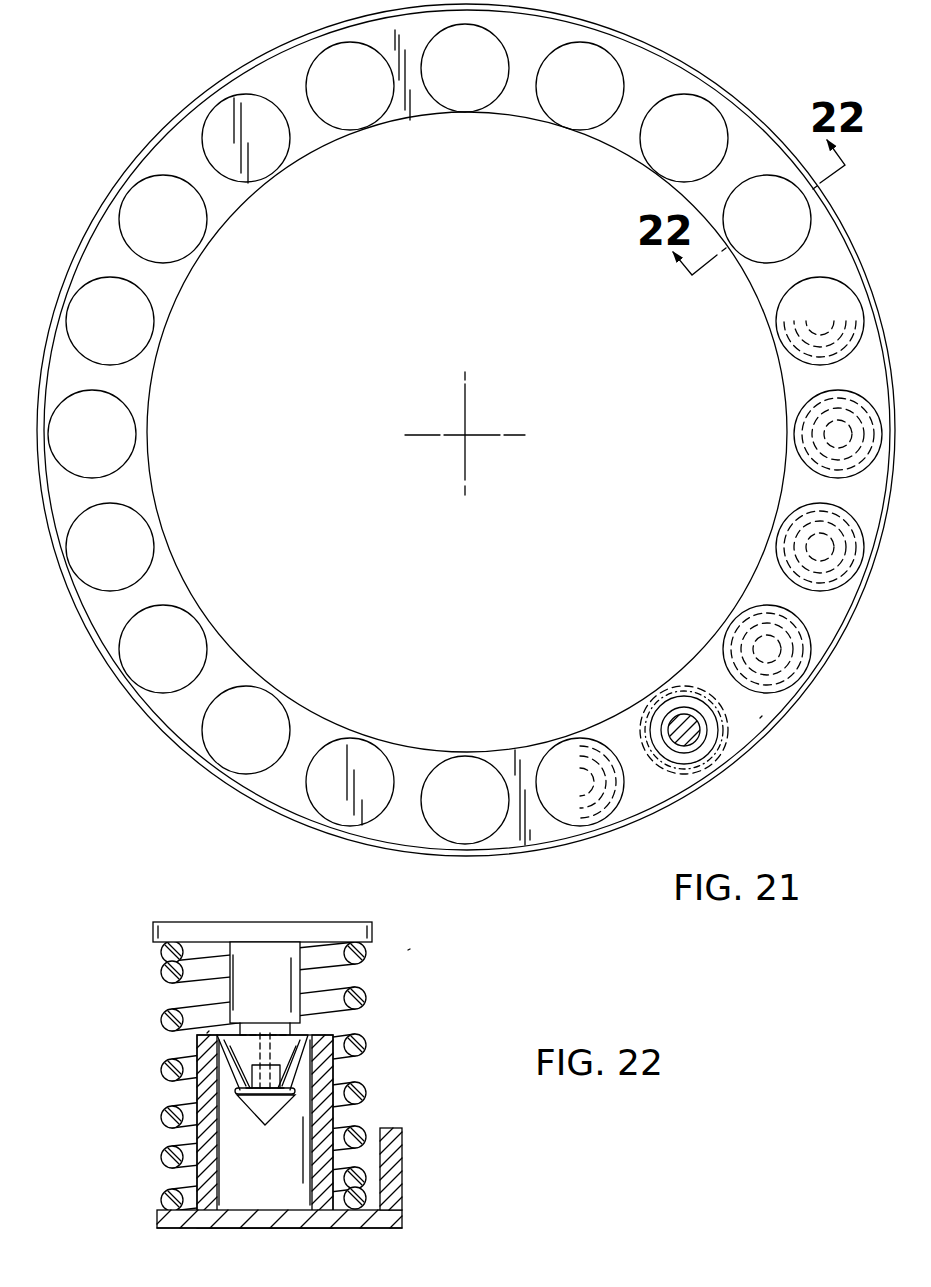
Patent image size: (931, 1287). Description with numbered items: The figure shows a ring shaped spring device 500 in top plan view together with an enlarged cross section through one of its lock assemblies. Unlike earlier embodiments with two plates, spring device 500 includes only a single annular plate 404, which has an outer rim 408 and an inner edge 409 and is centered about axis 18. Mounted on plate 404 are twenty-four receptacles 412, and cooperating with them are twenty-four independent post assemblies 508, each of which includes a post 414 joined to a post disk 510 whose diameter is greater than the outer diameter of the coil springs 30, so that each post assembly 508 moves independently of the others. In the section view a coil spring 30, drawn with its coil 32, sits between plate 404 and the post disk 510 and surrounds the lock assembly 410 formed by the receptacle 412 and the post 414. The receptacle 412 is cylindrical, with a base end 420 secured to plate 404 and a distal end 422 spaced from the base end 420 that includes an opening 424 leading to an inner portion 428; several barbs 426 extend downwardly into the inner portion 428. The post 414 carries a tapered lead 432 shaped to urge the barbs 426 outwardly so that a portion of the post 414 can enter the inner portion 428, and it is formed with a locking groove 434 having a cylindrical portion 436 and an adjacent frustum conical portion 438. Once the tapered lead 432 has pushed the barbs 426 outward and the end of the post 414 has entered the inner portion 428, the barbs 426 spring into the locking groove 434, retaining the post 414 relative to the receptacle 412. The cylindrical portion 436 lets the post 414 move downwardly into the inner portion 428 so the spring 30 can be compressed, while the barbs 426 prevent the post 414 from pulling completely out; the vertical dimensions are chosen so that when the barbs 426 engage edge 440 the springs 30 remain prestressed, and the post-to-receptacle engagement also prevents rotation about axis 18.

In FIG. 21, the axis 18 is at (468, 432).
In FIG. 21, the coil spring 30 is at (694, 763).
In FIG. 22, the coil spring 30 is at (168, 973).
In FIG. 22, the spring coil 32 is at (203, 988).
In FIG. 21, the annular plate 404 is at (760, 718).
In FIG. 22, the annular plate 404 is at (373, 1228).
In FIG. 21, the outer rim 408 is at (747, 752).
In FIG. 22, the outer rim 408 is at (390, 1173).
In FIG. 21, the inner edge 409 is at (760, 568).
In FIG. 22, the inner edge 409 is at (157, 1213).
In FIG. 22, the lock assembly 410 is at (220, 1050).
In FIG. 21, the receptacle 412 is at (704, 750).
In FIG. 22, the receptacle 412 is at (337, 1120).
In FIG. 21, the post 414 is at (684, 722).
In FIG. 22, the post 414 is at (275, 968).
In FIG. 22, the base end 420 is at (378, 1187).
In FIG. 22, the distal end 422 is at (335, 1032).
In FIG. 22, the opening 424 is at (207, 1033).
In FIG. 22, the barb 426 is at (222, 1058).
In FIG. 22, the inner portion 428 is at (223, 1085).
In FIG. 22, the tapered lead 432 is at (243, 1092).
In FIG. 22, the locking groove 434 is at (333, 1040).
In FIG. 22, the cylindrical portion 436 is at (333, 1065).
In FIG. 22, the frustum conical portion 438 is at (305, 1033).
In FIG. 22, the edge 440 is at (262, 1110).
In FIG. 21, the ring shaped spring device 500 is at (712, 75).
In FIG. 22, the ring shaped spring device 500 is at (408, 950).
In FIG. 21, the post assembly 508 is at (273, 147).
In FIG. 22, the post assembly 508 is at (203, 920).
In FIG. 21, the post disk 510 is at (243, 103).
In FIG. 22, the post disk 510 is at (175, 930).